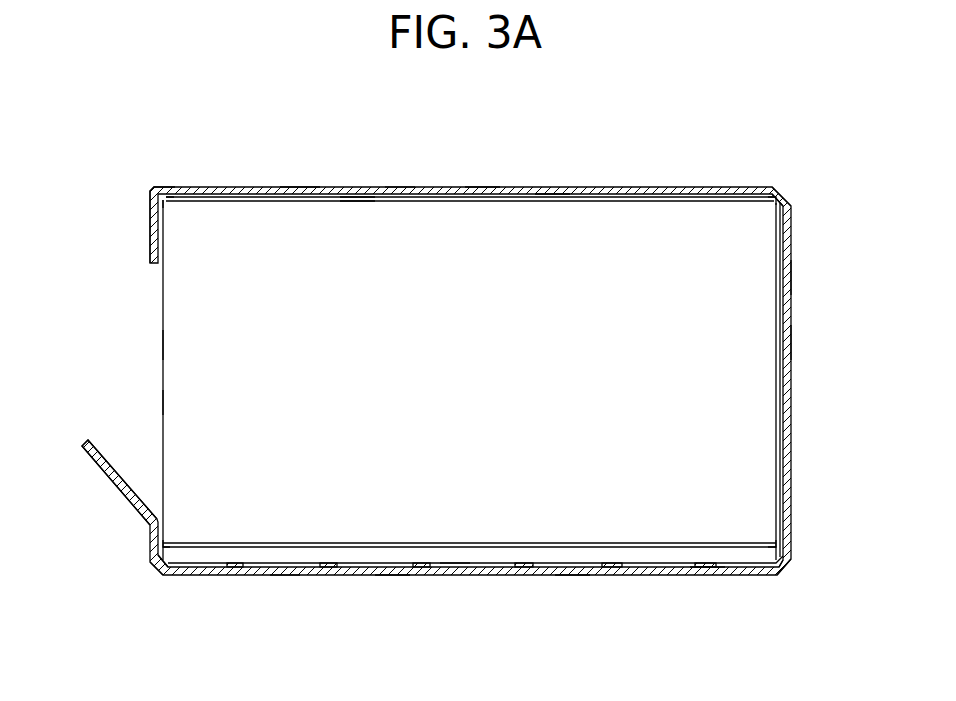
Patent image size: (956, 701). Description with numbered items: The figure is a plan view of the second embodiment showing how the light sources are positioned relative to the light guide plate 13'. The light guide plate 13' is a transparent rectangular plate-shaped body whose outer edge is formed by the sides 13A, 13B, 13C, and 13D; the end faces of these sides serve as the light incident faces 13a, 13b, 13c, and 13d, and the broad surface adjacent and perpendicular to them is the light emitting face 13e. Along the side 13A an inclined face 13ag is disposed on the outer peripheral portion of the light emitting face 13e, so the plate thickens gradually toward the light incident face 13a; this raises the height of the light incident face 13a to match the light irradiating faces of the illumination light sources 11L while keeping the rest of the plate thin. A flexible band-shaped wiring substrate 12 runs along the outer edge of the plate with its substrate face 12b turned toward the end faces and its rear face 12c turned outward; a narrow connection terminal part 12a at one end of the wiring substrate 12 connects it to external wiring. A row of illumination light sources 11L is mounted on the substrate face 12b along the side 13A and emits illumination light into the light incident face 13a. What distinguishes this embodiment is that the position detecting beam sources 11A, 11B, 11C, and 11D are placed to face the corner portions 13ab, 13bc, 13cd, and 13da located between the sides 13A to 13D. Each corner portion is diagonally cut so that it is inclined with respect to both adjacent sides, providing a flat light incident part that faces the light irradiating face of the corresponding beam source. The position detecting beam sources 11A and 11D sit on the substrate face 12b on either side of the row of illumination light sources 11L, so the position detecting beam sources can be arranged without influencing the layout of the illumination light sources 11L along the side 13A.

The position detecting beam source 11A is at (170, 557).
The position detecting beam source 11B is at (168, 205).
The position detecting beam source 11C is at (772, 214).
The position detecting beam source 11D is at (773, 563).
The illumination light source 11L is at (332, 560).
The wiring substrate 12 is at (150, 288).
The connection terminal part 12a is at (87, 450).
The substrate face 12b is at (347, 197).
The rear face 12c is at (482, 190).
The light guide plate 13' is at (436, 343).
The side 13A is at (390, 576).
The light incident face 13a is at (570, 576).
The side 13B is at (163, 343).
The light incident face 13b is at (163, 402).
The side 13C is at (297, 190).
The light incident face 13c is at (398, 187).
The side 13D is at (786, 340).
The light incident face 13d is at (786, 275).
The light emitting face 13e is at (550, 250).
The corner portion 13ab is at (153, 565).
The corner portion 13bc is at (165, 190).
The corner portion 13cd is at (780, 200).
The corner portion 13da is at (780, 570).
The inclined face 13ag is at (707, 552).